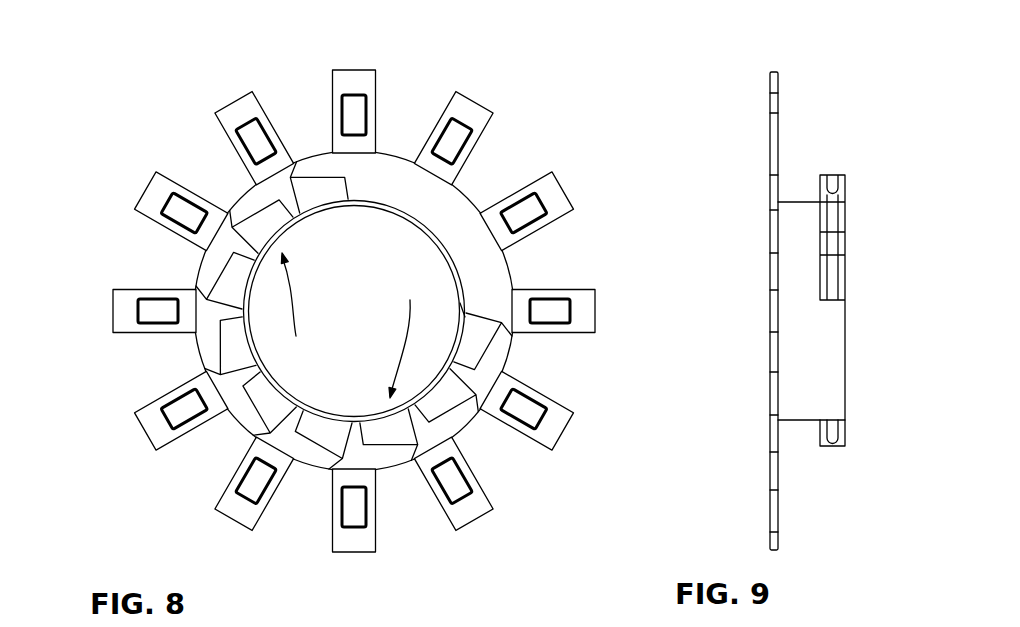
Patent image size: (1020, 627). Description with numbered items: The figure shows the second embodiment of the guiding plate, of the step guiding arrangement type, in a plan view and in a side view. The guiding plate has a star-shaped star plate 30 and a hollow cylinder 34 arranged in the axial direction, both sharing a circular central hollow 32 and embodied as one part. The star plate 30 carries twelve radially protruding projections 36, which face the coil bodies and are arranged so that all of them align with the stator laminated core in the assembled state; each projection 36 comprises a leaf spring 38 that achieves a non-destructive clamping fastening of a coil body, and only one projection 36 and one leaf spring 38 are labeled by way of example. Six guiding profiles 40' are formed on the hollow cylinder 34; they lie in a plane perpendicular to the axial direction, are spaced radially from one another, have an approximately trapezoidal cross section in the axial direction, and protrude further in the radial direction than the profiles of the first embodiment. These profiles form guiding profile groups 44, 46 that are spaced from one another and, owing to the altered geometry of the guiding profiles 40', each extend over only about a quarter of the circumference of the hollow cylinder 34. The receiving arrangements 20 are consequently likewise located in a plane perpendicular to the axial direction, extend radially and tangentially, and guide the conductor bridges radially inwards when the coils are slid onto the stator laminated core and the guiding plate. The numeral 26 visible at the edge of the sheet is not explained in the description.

In FIG. 9, the receiving arrangement 20 is at (830, 440).
In FIG. 8, the rotor 26 is at (428, 619).
In FIG. 8, the star plate 30 is at (354, 311).
In FIG. 9, the star plate 30 is at (714, 311).
In FIG. 8, the central hollow 32 is at (438, 293).
In FIG. 8, the hollow cylinder 34 is at (353, 315).
In FIG. 9, the hollow cylinder 34 is at (866, 371).
In FIG. 8, the projection 36 is at (453, 138).
In FIG. 9, the projection 36 is at (770, 377).
In FIG. 8, the leaf spring 38 is at (452, 141).
In FIG. 8, the guiding profile 40' is at (552, 345).
In FIG. 9, the guiding profile 40' is at (887, 493).
In FIG. 8, the guiding profile group 44 is at (308, 308).
In FIG. 8, the guiding profile group 46 is at (403, 332).